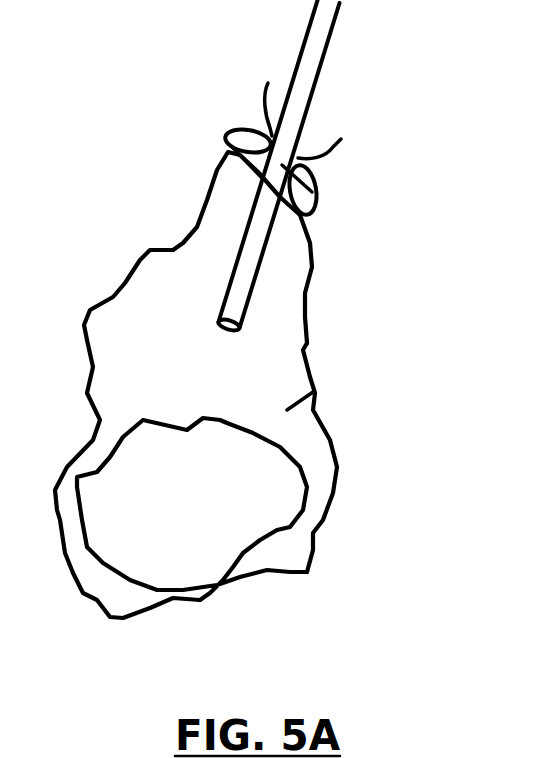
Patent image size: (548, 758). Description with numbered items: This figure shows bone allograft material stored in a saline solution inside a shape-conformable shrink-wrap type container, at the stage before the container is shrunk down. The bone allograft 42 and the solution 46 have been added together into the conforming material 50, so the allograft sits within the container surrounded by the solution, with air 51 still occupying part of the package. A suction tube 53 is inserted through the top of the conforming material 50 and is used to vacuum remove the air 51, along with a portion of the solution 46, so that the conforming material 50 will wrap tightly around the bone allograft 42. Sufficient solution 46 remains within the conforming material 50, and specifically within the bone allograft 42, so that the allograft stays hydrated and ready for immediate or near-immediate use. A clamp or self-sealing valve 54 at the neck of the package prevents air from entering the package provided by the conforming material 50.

The bone allograft 42 is at (197, 540).
The solution 46 is at (317, 390).
The conforming material 50 is at (307, 347).
The air 51 is at (163, 272).
The suction tube 53 is at (267, 215).
The clamp 54 is at (233, 133).